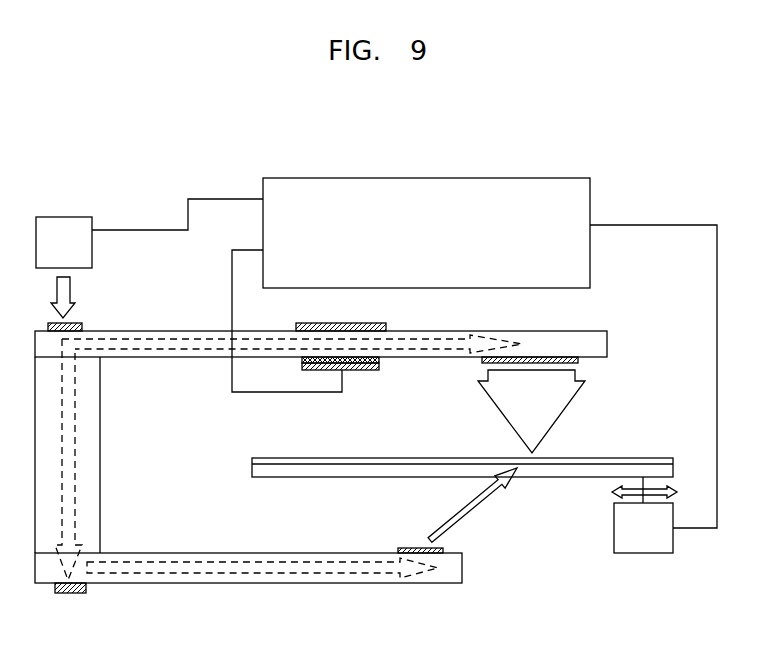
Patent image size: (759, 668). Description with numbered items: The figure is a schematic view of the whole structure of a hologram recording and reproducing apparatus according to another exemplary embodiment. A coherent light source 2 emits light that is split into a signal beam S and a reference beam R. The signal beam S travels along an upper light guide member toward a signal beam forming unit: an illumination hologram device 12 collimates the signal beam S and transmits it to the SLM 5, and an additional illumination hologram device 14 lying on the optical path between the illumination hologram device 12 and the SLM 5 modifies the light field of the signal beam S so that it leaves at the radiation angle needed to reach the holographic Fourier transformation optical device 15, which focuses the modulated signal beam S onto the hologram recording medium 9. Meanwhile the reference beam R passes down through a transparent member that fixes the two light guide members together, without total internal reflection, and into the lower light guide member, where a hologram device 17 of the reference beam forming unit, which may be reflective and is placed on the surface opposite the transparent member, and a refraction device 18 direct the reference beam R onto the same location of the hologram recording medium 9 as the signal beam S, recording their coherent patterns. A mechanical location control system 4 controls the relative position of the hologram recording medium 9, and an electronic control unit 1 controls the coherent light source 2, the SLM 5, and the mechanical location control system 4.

The electronic control unit 1 is at (413, 181).
The coherent light source 2 is at (68, 215).
The signal beam S is at (145, 342).
The reference beam R is at (75, 448).
The illumination hologram device 12 is at (388, 328).
The additional illumination hologram device 14 is at (380, 360).
The SLM 5 is at (380, 367).
The holographic Fourier transformation optical device 15 is at (582, 360).
The hologram recording medium 9 is at (278, 459).
The mechanical location control system 4 is at (653, 555).
The refraction device 18 is at (445, 550).
The hologram device 17 is at (67, 595).